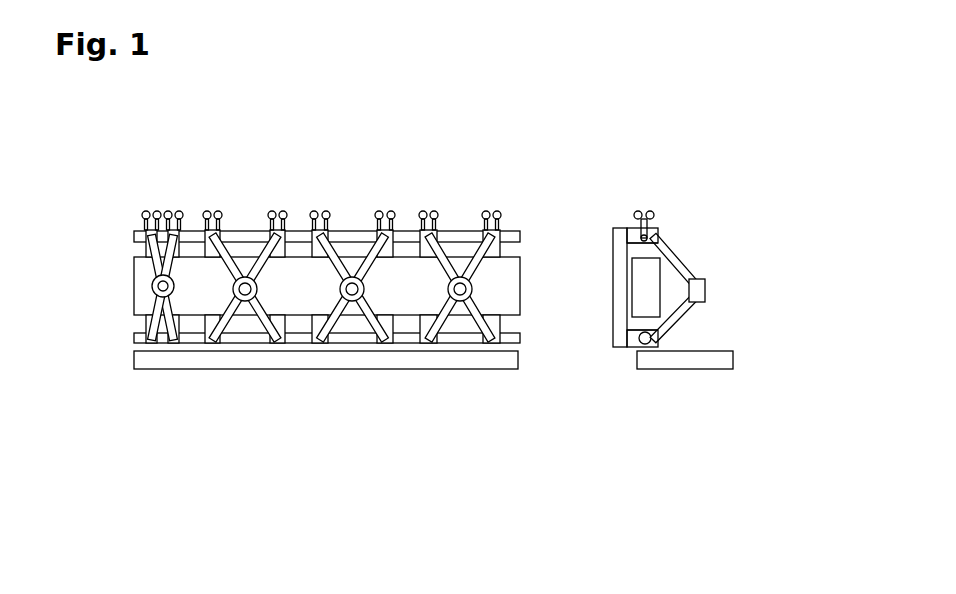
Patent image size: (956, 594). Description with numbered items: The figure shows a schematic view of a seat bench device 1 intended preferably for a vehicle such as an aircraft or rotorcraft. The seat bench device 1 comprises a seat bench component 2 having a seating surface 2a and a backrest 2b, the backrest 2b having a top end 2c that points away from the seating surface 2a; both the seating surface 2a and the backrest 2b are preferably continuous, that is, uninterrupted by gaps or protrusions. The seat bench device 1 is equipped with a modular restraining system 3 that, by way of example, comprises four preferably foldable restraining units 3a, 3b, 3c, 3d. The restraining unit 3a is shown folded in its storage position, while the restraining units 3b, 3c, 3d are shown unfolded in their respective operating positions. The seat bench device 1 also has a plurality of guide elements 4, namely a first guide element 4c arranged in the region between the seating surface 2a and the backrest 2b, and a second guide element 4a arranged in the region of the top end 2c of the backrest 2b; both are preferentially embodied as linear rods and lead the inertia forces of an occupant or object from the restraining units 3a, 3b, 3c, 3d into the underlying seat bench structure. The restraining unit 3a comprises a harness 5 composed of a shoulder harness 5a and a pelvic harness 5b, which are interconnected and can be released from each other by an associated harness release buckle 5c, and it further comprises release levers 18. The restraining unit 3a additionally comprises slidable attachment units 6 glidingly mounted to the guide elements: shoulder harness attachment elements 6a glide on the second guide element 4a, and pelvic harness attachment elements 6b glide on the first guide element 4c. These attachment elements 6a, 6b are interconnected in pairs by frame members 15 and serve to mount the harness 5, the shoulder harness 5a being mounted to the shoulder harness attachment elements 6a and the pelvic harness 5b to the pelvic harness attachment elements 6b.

The seat bench device 1 is at (498, 130).
The seat bench component 2 is at (525, 276).
The seating surface 2a is at (400, 364).
The backrest 2b is at (508, 295).
The top end 2c is at (409, 241).
The modular restraining system 3 is at (621, 221).
The restraining unit 3a is at (162, 204).
The restraining unit 3b is at (231, 224).
The restraining unit 3c is at (341, 224).
The restraining unit 3d is at (446, 224).
The guide elements 4 is at (298, 225).
The second guide element 4a is at (514, 240).
The first guide element 4c is at (516, 337).
The harness 5 is at (136, 246).
The shoulder harness 5a is at (150, 263).
The pelvic harness 5b is at (145, 322).
The harness release buckle 5c is at (153, 285).
The slidable attachment units 6 is at (194, 349).
The shoulder harness attachment elements 6a is at (137, 224).
The pelvic harness attachment elements 6b is at (175, 352).
The frame members 15 is at (197, 322).
The release levers 18 is at (178, 203).